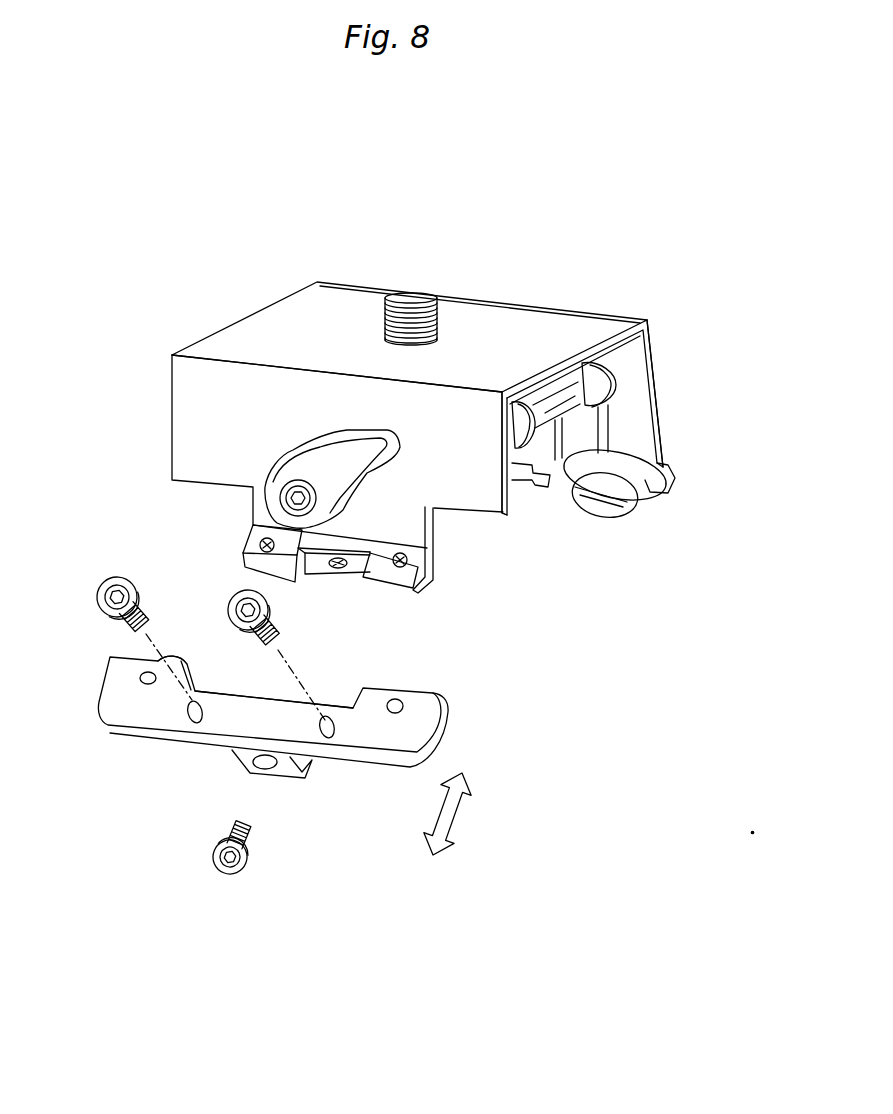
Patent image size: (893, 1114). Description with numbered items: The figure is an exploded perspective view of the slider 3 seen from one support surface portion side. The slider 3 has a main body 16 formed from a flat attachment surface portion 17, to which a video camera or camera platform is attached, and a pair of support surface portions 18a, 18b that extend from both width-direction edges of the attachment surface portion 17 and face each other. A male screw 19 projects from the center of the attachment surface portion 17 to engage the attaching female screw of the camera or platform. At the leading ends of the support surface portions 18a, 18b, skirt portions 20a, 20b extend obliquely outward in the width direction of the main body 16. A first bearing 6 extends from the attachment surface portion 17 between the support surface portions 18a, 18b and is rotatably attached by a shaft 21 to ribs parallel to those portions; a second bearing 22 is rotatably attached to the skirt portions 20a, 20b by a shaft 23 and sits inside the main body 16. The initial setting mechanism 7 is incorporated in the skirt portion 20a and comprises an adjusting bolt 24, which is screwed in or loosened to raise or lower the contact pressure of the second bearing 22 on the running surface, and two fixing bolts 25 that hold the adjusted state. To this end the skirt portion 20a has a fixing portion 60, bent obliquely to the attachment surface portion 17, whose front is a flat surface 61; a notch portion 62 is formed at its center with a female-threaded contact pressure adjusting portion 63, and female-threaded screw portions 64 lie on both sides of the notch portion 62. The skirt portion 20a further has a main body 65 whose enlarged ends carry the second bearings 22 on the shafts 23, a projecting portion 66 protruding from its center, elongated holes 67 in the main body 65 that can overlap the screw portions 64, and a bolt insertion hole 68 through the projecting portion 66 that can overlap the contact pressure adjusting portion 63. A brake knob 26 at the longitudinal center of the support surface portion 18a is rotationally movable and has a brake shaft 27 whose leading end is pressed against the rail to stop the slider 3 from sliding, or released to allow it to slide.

The slider 3 is at (553, 297).
The first bearing 6 is at (608, 379).
The initial setting mechanism 7 is at (536, 590).
The main body 16 is at (667, 322).
The attachment surface portion 17 is at (558, 326).
The support surface portion 18a is at (497, 492).
The support surface portion 18b is at (657, 432).
The male screw 19 is at (410, 296).
The skirt portion 20a is at (338, 810).
The skirt portion 20b is at (668, 466).
The shaft 21 is at (565, 402).
The second bearing 22 is at (642, 497).
The shaft 23 is at (145, 685).
The adjusting bolt 24 is at (228, 875).
The fixing bolt 25 is at (115, 580).
The brake knob 26 is at (300, 452).
The brake shaft 27 is at (286, 499).
The fixing portion 60 is at (392, 585).
The flat surface 61 is at (360, 575).
The notch portion 62 is at (334, 569).
The contact pressure adjusting portion 63 is at (340, 573).
The screw portion 64 is at (260, 545).
The main body 65 is at (365, 746).
The projecting portion 66 is at (238, 760).
The elongated hole 67 is at (195, 723).
The bolt insertion hole 68 is at (268, 769).